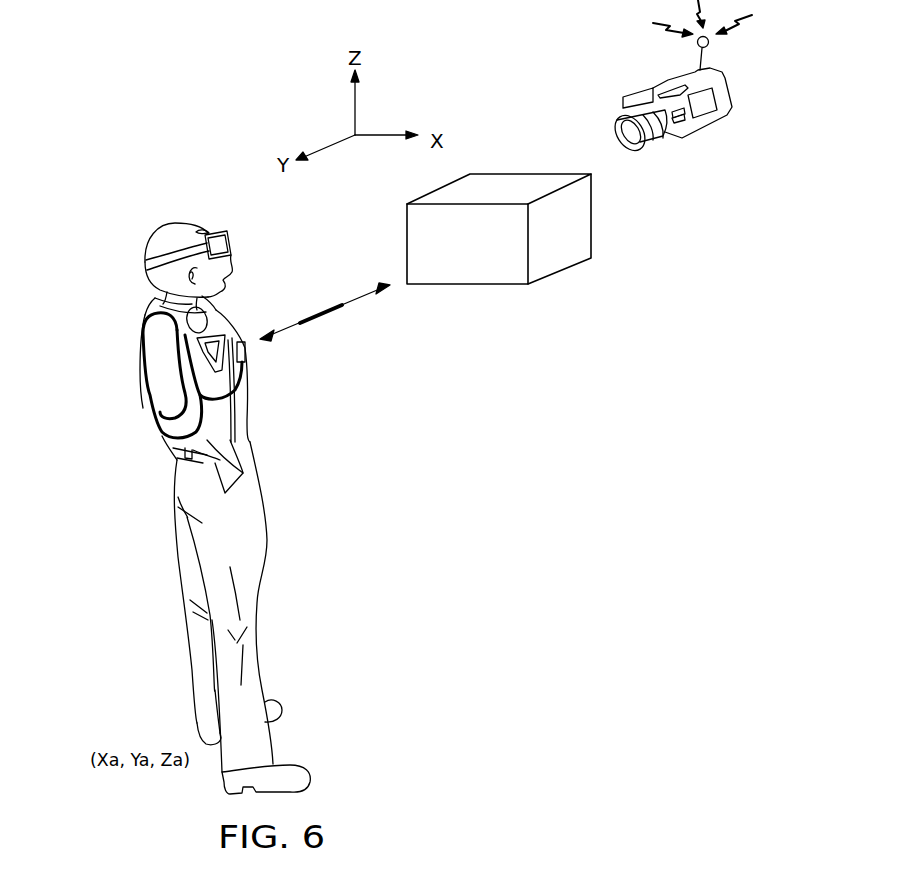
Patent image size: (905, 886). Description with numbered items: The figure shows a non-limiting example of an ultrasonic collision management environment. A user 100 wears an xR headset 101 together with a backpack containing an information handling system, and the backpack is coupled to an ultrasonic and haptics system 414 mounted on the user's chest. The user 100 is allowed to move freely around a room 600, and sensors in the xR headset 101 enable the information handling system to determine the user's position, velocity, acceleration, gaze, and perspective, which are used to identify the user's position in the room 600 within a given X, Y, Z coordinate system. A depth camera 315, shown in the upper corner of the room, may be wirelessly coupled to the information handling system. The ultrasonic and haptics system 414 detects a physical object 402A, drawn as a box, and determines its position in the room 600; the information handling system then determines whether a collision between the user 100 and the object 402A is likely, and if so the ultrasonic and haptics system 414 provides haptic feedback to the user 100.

The room 600 is at (141, 65).
The user 100 is at (177, 222).
The xR headset 101 is at (232, 252).
The ultrasonic and haptics system 414 is at (246, 348).
The physical object 402A is at (593, 214).
The depth camera 315 is at (705, 123).